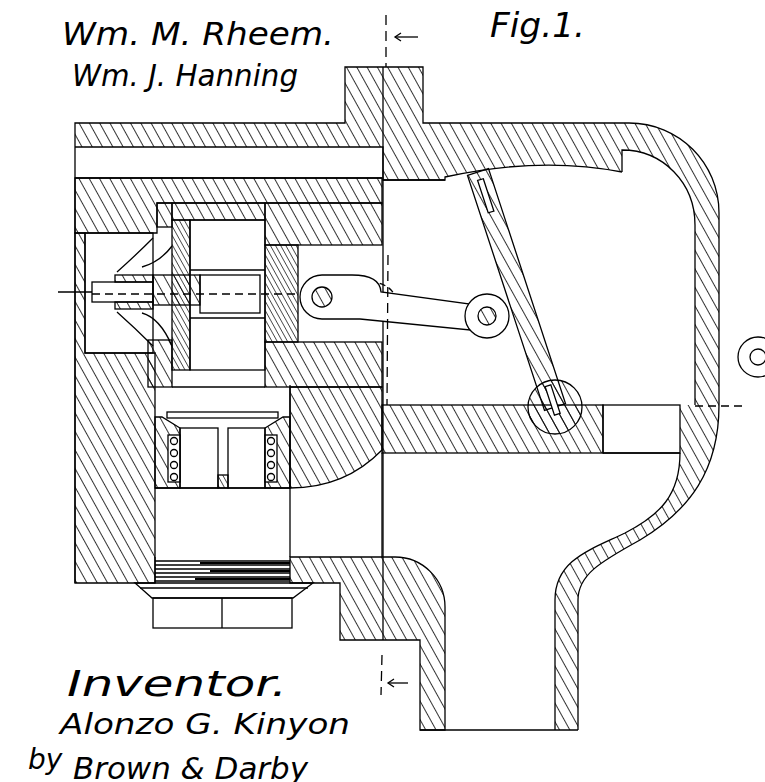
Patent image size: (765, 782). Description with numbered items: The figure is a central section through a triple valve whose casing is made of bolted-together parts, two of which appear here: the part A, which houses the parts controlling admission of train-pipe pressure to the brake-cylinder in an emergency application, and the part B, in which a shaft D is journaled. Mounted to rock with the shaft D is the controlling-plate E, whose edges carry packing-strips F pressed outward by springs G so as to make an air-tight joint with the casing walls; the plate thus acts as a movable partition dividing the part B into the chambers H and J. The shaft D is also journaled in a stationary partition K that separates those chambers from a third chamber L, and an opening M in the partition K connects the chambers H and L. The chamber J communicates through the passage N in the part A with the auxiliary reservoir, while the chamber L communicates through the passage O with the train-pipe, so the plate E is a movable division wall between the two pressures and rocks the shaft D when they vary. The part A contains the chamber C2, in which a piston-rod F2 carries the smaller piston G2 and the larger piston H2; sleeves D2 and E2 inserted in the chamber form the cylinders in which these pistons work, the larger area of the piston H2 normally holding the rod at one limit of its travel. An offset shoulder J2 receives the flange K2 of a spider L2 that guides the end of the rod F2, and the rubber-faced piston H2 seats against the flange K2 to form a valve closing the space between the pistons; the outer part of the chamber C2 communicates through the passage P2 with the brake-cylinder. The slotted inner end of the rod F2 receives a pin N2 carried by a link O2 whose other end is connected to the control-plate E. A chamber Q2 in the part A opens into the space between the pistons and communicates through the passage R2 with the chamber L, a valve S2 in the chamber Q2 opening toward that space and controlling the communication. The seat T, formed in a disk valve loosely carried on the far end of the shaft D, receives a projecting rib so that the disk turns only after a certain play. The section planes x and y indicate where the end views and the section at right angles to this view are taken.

The casing part A is at (117, 123).
The casing part B is at (568, 130).
The chamber H is at (675, 236).
The chamber L is at (535, 535).
The passage O is at (533, 720).
The stationary partition K is at (478, 447).
The shaft D is at (641, 411).
The opening M is at (643, 453).
The offset shoulder J2 is at (150, 210).
The passage N is at (202, 178).
The spider flange K2 is at (162, 203).
The sleeve E2 is at (218, 203).
The sleeve D2 is at (377, 220).
The chamber J is at (414, 201).
The chamber C2 is at (85, 247).
The piston H2 is at (191, 246).
The piston-rod F2 is at (230, 277).
The section line Y Y y is at (398, 353).
The spider L2 is at (140, 322).
The passage P2 is at (110, 403).
The piston G2 is at (300, 266).
The pin N2 is at (322, 307).
The controlling-plate E is at (517, 250).
The springs G is at (494, 198).
The packing-strips F is at (497, 178).
The link O2 is at (467, 316).
The passage R2 is at (336, 472).
The valve S2 is at (207, 416).
The recess or seat T is at (265, 465).
The chamber Q2 is at (224, 506).
The section line x x is at (393, 358).